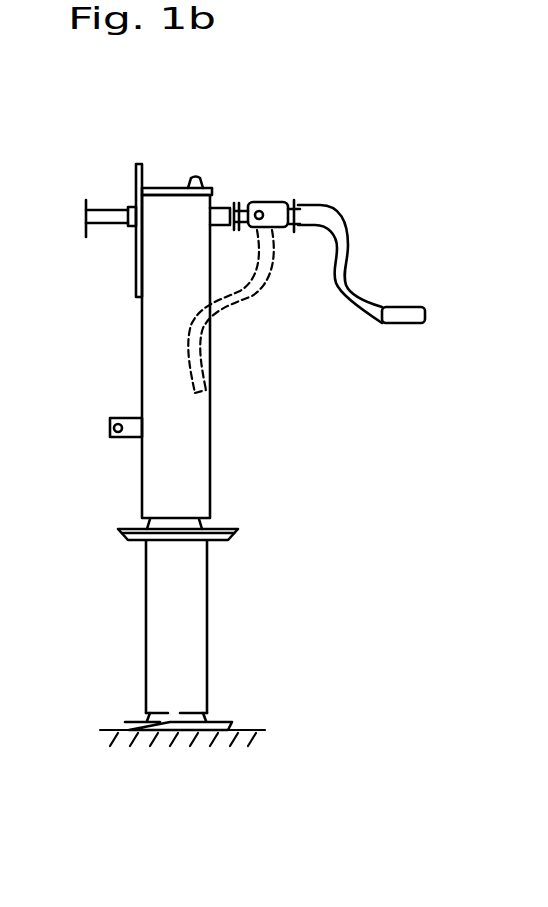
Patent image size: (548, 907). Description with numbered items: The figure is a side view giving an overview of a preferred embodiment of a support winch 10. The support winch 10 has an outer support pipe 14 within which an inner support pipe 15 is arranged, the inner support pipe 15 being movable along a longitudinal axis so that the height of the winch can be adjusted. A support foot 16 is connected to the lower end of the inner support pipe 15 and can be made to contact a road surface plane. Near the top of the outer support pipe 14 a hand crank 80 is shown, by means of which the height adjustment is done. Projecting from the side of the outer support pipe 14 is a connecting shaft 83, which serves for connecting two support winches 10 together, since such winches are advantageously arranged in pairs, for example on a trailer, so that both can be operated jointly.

The support winch 10 is at (244, 162).
The connecting shaft 83 is at (112, 210).
The outer support pipe 14 is at (203, 428).
The hand crank 80 is at (347, 305).
The support foot 16 is at (236, 540).
The inner support pipe 15 is at (197, 628).